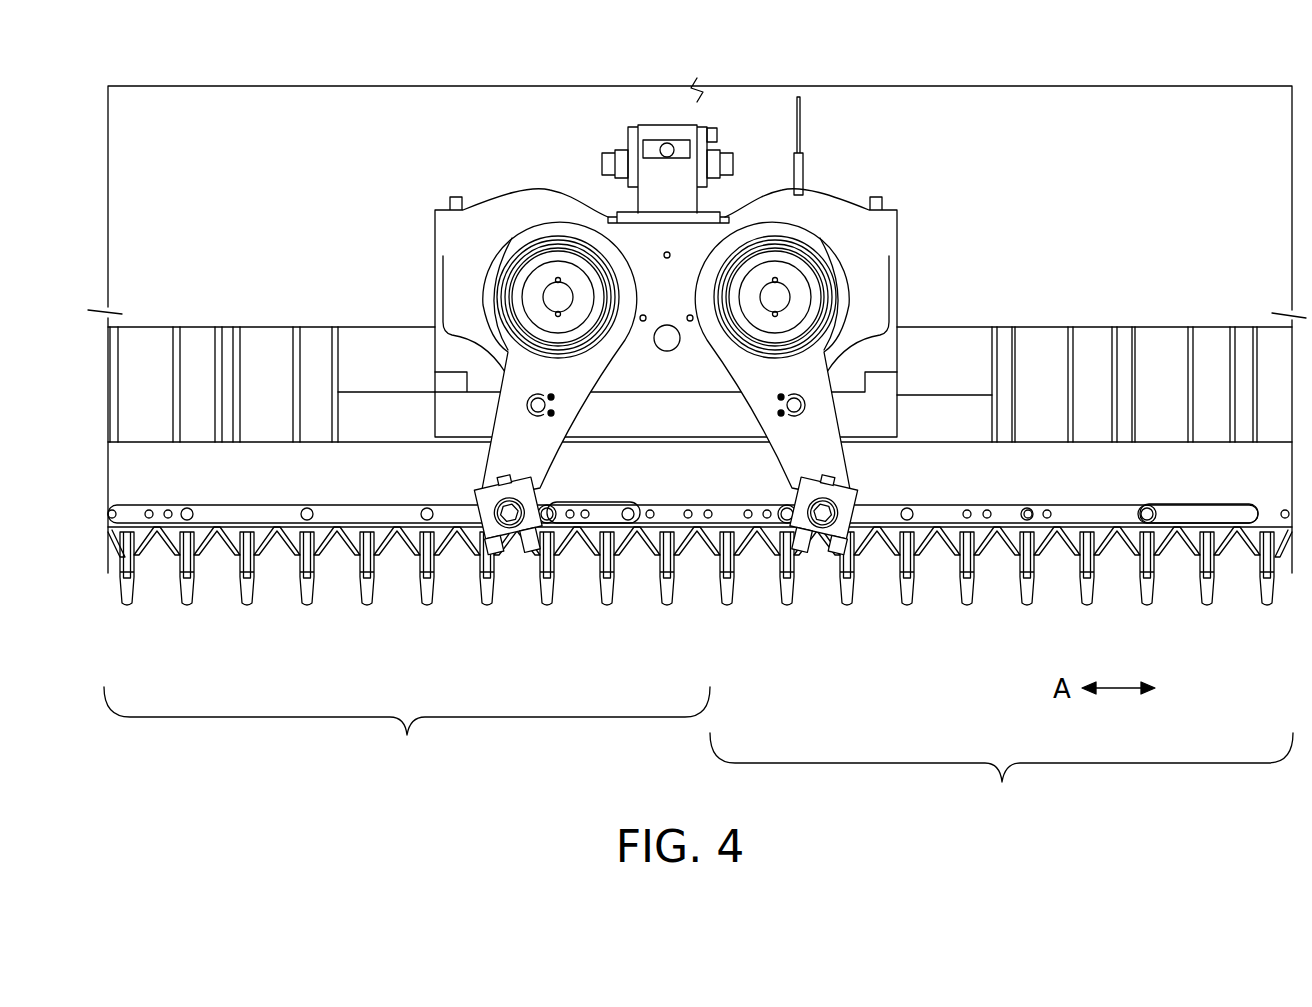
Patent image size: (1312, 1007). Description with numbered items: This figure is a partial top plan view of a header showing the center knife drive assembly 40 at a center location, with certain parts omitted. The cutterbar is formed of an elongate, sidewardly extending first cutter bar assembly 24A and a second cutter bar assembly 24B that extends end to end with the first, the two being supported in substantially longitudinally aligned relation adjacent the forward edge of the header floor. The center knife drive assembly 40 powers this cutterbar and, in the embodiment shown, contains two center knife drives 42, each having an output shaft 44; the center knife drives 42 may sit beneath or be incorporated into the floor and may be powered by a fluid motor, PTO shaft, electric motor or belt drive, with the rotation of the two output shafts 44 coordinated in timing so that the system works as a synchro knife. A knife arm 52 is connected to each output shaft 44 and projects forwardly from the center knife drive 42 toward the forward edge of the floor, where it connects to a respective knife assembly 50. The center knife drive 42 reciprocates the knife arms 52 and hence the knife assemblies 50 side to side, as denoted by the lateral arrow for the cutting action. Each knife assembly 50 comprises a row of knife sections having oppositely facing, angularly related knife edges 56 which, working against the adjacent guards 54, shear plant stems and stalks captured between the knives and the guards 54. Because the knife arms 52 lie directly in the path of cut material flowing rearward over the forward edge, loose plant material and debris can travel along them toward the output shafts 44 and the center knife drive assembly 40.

The center knife drive assembly 40 is at (475, 118).
The center knife drive 42 is at (450, 240).
The output shaft 44 is at (777, 297).
The knife assembly 50 is at (700, 606).
The knife arm 52 is at (518, 368).
The guard 54 is at (432, 585).
The knife edge 56 is at (403, 540).
The first cutter bar assembly 24A is at (407, 727).
The second cutter bar assembly 24B is at (1001, 774).